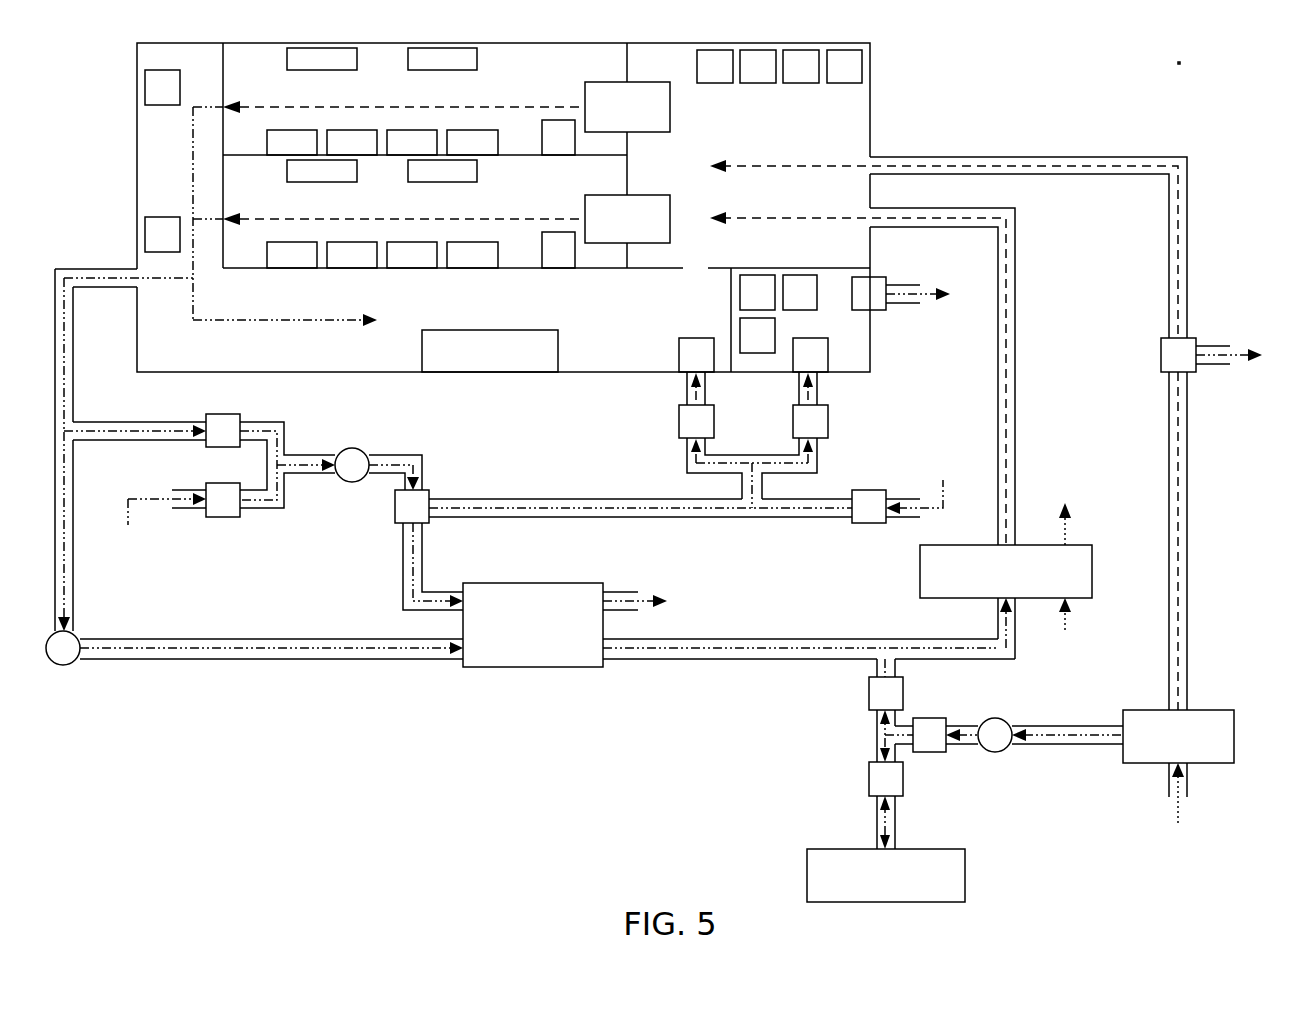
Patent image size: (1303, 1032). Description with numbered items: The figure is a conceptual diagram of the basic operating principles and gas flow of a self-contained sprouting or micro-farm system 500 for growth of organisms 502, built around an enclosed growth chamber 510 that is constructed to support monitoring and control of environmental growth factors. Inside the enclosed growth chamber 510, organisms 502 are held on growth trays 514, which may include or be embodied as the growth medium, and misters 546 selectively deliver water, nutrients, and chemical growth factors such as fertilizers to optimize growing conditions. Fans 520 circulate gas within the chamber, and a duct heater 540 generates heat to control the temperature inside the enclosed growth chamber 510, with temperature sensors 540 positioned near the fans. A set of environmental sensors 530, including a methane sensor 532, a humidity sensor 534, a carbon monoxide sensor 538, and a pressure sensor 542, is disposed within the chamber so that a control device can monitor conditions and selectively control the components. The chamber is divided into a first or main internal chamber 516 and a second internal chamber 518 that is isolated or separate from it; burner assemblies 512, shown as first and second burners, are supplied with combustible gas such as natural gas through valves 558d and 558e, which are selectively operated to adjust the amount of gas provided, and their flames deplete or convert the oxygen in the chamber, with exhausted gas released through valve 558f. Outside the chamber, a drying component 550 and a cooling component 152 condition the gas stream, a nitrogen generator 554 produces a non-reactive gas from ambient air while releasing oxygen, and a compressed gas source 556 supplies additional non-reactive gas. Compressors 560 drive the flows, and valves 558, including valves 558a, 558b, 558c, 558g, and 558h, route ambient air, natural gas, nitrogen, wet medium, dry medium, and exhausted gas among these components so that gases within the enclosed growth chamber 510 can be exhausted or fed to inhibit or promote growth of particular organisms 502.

The system for growth of organisms 500 is at (1185, 52).
The enclosed growth chamber 510 is at (137, 57).
The pressure sensor 542 is at (145, 88).
The humidity sensor 534 is at (145, 232).
The mister 546 is at (322, 70).
The growth tray 514 is at (241, 155).
The organisms 502 is at (382, 199).
The duct heater 540 is at (558, 158).
The fan 520 is at (640, 82).
The environmental sensors 530 is at (885, 66).
The methane sensor 532 is at (715, 83).
The carbon monoxide sensor 538 is at (844, 83).
The second internal chamber 518 is at (838, 282).
The burner assembly 512 is at (679, 355).
The first internal chamber 516 is at (598, 358).
The valve 558 is at (872, 480).
The valve 558a is at (395, 509).
The valve 558b is at (930, 752).
The valve 558c is at (903, 697).
The valve 558d is at (679, 421).
The valve 558e is at (828, 422).
The valve 558f is at (880, 310).
The valve 558g is at (222, 414).
The valve 558h is at (869, 781).
The compressor 560 is at (350, 448).
The drying component 550 is at (530, 583).
The cooling component 152 is at (920, 572).
The nitrogen generator 554 is at (1234, 730).
The compressed gas source 556 is at (968, 878).